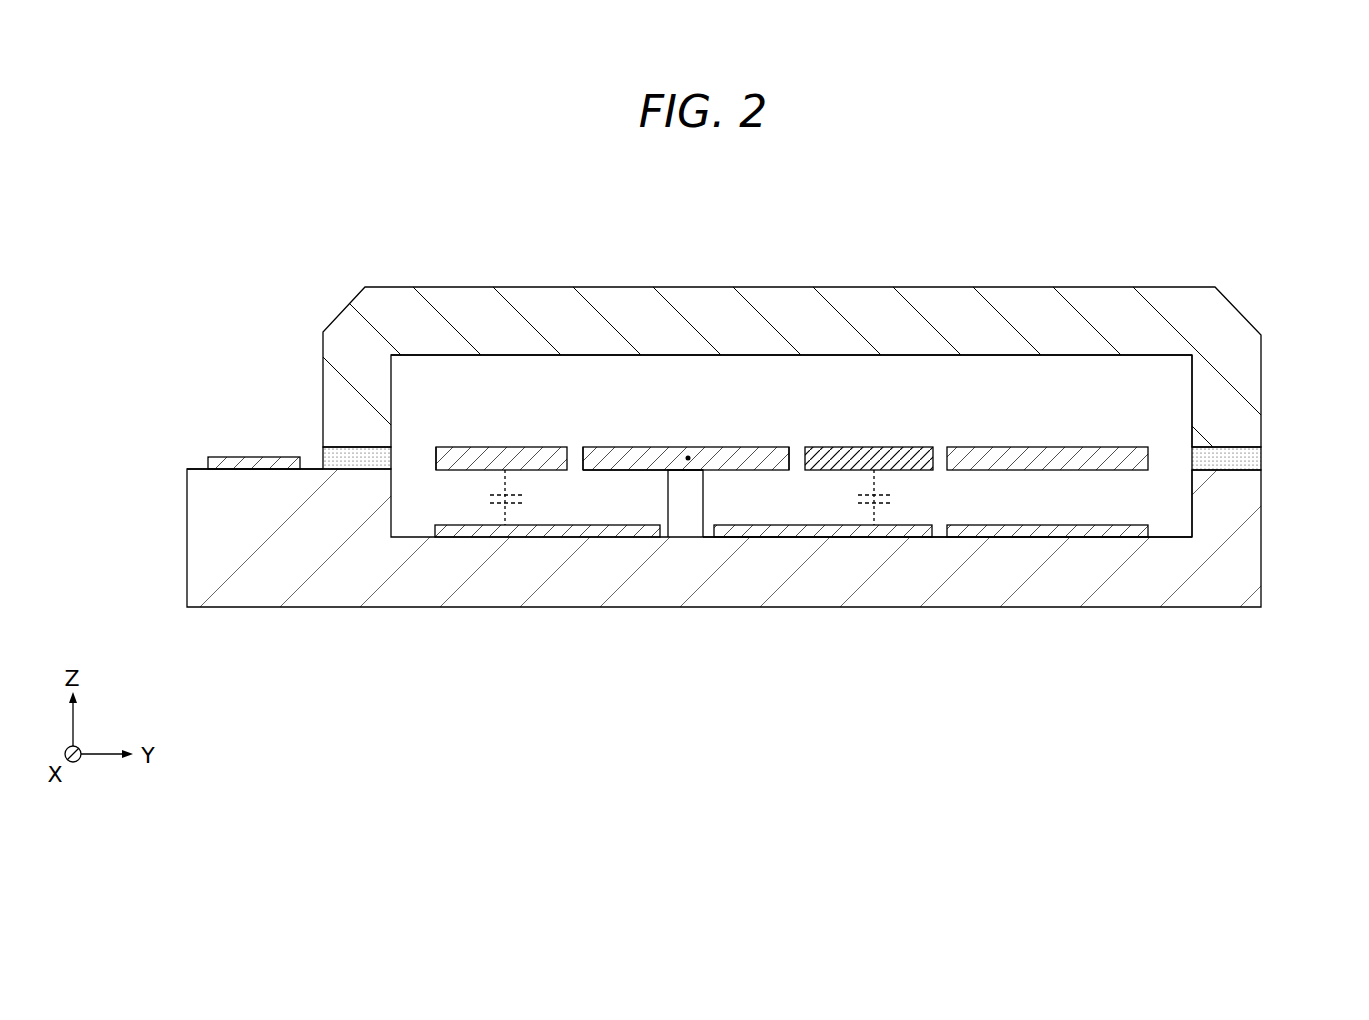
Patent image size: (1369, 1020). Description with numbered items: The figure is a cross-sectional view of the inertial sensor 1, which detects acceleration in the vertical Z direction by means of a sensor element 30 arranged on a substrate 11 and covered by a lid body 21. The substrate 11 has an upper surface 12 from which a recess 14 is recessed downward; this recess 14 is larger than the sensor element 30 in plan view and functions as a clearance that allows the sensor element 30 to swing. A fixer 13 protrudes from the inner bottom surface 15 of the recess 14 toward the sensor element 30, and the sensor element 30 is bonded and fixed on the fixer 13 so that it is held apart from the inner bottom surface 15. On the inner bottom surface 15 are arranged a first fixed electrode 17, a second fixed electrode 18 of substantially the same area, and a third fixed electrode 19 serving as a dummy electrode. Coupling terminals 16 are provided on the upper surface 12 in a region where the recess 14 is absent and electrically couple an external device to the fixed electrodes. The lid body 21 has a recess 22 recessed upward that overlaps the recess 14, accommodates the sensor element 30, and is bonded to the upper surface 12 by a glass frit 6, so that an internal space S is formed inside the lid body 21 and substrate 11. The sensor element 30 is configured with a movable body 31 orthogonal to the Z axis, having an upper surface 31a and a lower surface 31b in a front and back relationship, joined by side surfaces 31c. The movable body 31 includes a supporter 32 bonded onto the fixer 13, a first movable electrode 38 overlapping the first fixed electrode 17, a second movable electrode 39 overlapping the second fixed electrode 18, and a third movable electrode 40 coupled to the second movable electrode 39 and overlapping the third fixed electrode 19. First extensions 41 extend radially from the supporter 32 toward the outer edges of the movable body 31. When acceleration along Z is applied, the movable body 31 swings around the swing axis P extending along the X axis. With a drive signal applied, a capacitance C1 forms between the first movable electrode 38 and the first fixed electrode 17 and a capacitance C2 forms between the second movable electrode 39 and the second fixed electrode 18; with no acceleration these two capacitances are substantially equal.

The inertial sensor 1 is at (1316, 211).
The glass frit 6 is at (1261, 461).
The substrate 11 is at (1255, 533).
The upper surface 12 is at (187, 468).
The fixer 13 is at (692, 503).
The recess 14 is at (1192, 517).
The inner bottom surface 15 is at (957, 538).
The coupling terminals 16 is at (247, 456).
The first fixed electrode 17 is at (482, 527).
The second fixed electrode 18 is at (822, 524).
The third fixed electrode 19 is at (1110, 525).
The lid body 21 is at (1258, 393).
The recess 22 is at (1190, 410).
The sensor element 30 is at (964, 436).
The movable body 31 is at (818, 447).
The upper surface 31a is at (642, 447).
The lower surface 31b is at (632, 470).
The side surfaces 31c is at (436, 457).
The supporter 32 is at (703, 445).
The first movable electrode 38 is at (487, 447).
The second movable electrode 39 is at (875, 447).
The third movable electrode 40 is at (1036, 447).
The first extensions 41 is at (594, 447).
The swing axis P is at (689, 454).
The internal space S is at (536, 377).
The capacitance C1 is at (525, 497).
The capacitance C2 is at (894, 497).